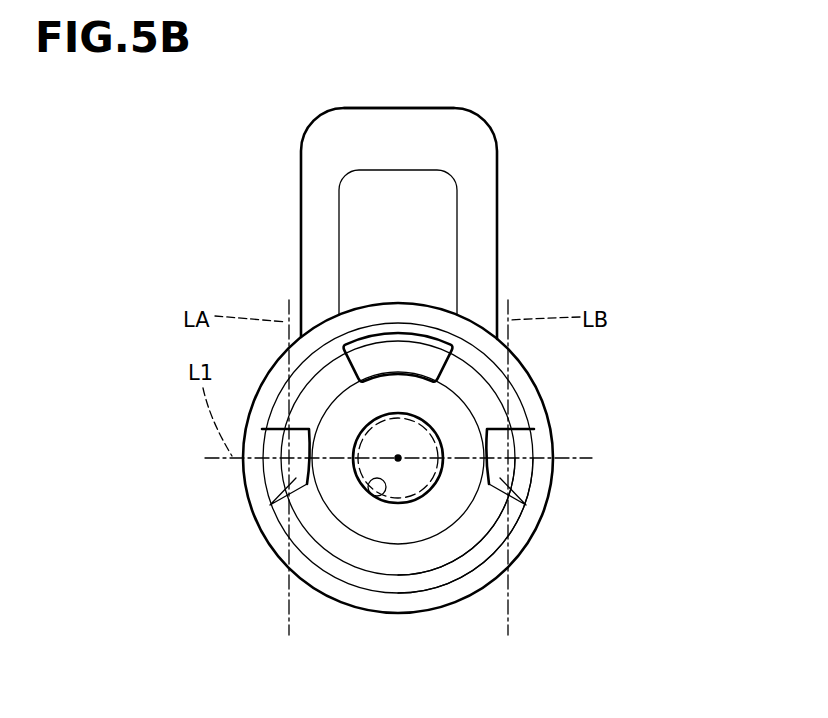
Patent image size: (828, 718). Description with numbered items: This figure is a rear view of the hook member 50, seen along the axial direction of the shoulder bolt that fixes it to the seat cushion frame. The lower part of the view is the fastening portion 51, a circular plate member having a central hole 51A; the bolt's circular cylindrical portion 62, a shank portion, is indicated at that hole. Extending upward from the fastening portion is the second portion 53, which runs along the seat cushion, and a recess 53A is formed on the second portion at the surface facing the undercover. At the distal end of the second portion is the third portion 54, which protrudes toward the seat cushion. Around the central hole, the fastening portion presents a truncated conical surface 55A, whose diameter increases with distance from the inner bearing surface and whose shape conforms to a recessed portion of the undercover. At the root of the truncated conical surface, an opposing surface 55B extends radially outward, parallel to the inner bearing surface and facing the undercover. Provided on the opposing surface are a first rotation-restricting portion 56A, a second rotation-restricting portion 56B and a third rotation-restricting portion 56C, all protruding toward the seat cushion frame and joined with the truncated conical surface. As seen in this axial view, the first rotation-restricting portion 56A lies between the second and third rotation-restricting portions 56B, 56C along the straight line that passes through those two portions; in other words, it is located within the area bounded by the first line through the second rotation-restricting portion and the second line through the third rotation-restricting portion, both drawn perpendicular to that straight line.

The hook member 50 is at (389, 344).
The fastening portion 51 is at (389, 454).
The central hole 51A is at (382, 483).
The second portion 53 is at (395, 200).
The recess 53A is at (428, 233).
The third portion 54 is at (398, 157).
The truncated conical surface 55A is at (483, 515).
The opposing surface 55B is at (445, 575).
The first rotation-restricting portion 56A is at (417, 347).
The second rotation-restricting portion 56B is at (278, 471).
The third rotation-restricting portion 56C is at (518, 471).
The circular cylindrical portion 62 is at (437, 430).